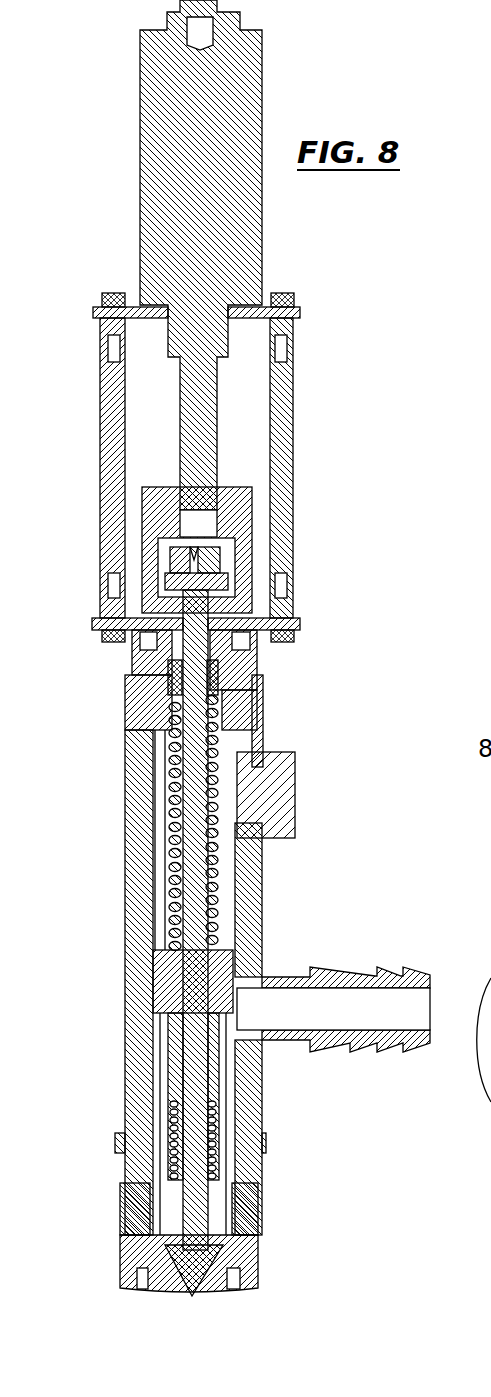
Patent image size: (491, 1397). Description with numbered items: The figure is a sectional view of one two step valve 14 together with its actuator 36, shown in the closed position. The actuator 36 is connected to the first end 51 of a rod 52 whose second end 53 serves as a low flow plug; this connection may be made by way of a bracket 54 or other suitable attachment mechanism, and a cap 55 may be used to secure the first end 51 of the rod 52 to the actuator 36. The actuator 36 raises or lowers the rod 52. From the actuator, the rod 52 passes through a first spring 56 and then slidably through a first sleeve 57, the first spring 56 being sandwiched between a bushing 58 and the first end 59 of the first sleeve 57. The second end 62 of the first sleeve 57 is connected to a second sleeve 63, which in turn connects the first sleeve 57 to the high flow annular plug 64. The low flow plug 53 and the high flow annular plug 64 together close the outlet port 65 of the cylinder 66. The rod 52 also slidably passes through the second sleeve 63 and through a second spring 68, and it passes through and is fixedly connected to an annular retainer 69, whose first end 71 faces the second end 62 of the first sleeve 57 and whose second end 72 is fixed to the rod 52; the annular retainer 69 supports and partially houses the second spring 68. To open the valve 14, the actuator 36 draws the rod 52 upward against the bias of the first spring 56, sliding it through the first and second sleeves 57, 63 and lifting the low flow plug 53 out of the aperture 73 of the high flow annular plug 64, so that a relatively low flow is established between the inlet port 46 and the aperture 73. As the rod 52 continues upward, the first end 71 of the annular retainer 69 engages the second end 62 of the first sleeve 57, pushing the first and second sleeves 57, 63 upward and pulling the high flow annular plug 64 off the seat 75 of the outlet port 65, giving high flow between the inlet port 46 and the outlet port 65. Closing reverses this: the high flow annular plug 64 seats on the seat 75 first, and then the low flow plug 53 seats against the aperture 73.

The two step valve 14 is at (100, 898).
The actuator 36 is at (160, 133).
The inlet port 46 is at (350, 976).
The first end of rod 51 is at (253, 592).
The rod 52 is at (278, 742).
The low flow plug 53 is at (166, 1290).
The bracket 54 is at (122, 480).
The cap 55 is at (250, 550).
The first spring 56 is at (173, 782).
The first sleeve 57 is at (155, 1036).
The bushing 58 is at (263, 690).
The first end of first sleeve 59 is at (215, 952).
The second end of first sleeve 62 is at (163, 1085).
The second sleeve 63 is at (160, 1147).
The high flow annular plug 64 is at (157, 1243).
The outlet port 65 is at (228, 1293).
The cylinder 66 is at (128, 935).
The second spring 68 is at (240, 1112).
The annular retainer 69 is at (232, 1136).
The first end of annular retainer 71 is at (213, 1103).
The second end of annular retainer 72 is at (258, 1180).
The aperture 73 is at (190, 1290).
The seat 75 is at (127, 1273).